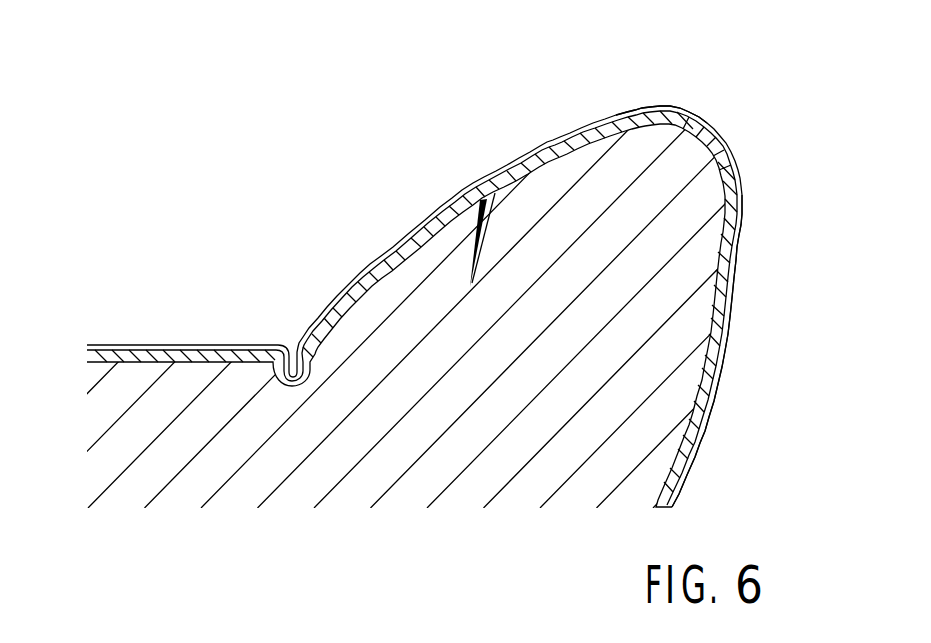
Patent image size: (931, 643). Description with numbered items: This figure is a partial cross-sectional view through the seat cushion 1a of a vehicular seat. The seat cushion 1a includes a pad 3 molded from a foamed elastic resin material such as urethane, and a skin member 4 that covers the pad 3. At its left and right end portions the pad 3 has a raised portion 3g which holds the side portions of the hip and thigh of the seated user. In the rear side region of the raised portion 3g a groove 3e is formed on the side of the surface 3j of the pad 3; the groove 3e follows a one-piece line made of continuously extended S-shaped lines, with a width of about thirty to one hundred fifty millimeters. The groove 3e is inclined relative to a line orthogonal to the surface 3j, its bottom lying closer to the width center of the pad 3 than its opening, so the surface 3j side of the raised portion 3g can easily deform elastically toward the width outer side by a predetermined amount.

The seat cushion 1a is at (408, 207).
The pad 3 is at (395, 338).
The groove 3e is at (471, 238).
The raised portion 3g is at (637, 268).
The surface 3j is at (640, 120).
The skin member 4 is at (585, 145).